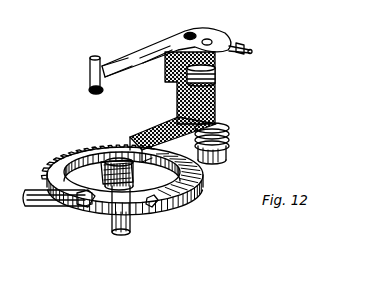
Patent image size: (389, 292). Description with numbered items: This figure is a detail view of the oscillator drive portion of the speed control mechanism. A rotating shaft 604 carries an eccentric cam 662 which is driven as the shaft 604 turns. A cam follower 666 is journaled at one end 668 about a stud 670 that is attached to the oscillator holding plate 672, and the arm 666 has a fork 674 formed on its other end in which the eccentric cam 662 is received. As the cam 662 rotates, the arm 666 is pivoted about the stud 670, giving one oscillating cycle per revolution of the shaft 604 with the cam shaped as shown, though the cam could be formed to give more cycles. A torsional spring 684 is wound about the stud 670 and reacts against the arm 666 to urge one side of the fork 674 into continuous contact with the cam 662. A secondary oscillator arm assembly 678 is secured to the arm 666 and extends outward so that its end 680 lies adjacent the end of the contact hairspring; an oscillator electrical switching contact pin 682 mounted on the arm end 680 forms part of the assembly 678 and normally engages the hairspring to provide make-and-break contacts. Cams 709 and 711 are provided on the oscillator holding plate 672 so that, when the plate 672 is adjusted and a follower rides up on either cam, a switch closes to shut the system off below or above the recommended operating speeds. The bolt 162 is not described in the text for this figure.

The bolt 162 is at (243, 50).
The shaft 604 is at (118, 226).
The eccentric cam 662 is at (105, 184).
The cam follower 666 is at (160, 125).
The end 668 is at (218, 100).
The stud 670 is at (216, 69).
The oscillator holding plate 672 is at (195, 201).
The fork 674 is at (99, 168).
The secondary oscillator arm assembly 678 is at (150, 46).
The arm end 680 is at (92, 91).
The oscillator electrical switching contact pin 682 is at (89, 62).
The torsional spring 684 is at (229, 145).
The cam 709 is at (66, 200).
The cam 711 is at (157, 206).